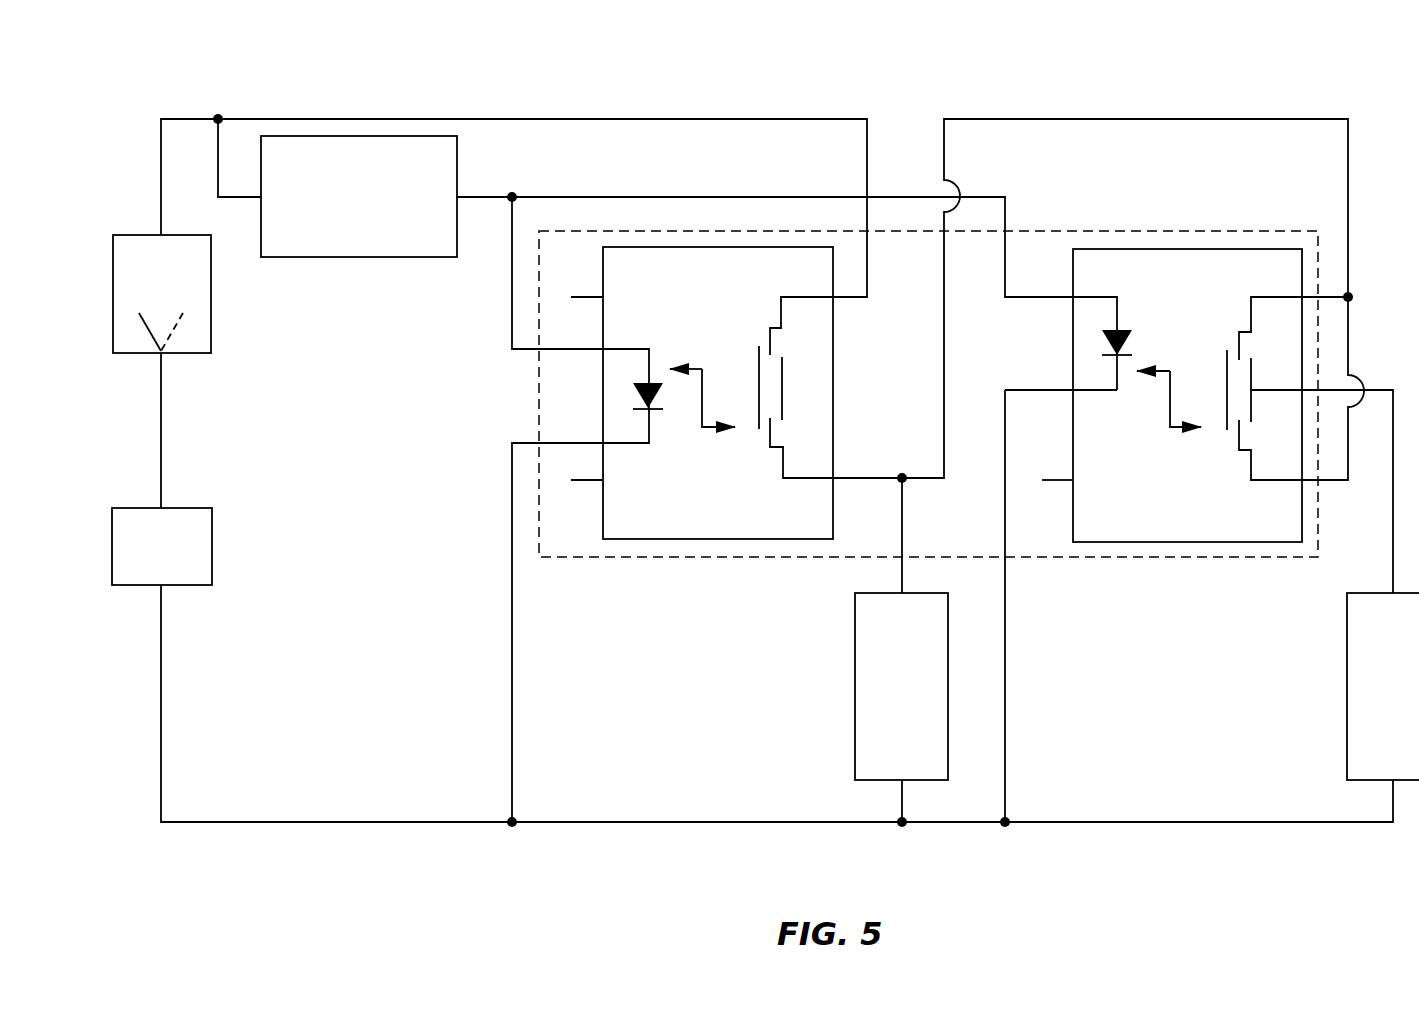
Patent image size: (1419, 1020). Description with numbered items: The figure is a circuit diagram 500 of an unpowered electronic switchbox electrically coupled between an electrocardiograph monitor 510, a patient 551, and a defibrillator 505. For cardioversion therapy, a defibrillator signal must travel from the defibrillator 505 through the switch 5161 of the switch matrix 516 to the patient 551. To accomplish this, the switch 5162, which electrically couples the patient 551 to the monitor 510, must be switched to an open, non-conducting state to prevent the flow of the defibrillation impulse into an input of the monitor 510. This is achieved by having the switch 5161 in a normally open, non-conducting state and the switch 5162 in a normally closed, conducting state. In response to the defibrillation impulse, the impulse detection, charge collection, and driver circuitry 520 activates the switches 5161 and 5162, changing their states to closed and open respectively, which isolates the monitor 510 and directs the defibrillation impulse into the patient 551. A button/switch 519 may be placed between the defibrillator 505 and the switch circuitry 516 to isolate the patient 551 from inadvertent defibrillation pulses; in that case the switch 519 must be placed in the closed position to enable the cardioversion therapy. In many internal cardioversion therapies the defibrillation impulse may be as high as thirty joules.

The circuit diagram 500 is at (913, 78).
The defibrillator 505 is at (180, 585).
The electrocardiograph monitor 510 is at (1347, 688).
The switch matrix 516 is at (1084, 231).
The switch 5161 is at (721, 247).
The switch 5162 is at (1188, 249).
The button/switch 519 is at (187, 353).
The impulse detection, charge collection, and driver circuitry 520 is at (362, 257).
The patient 551 is at (855, 688).